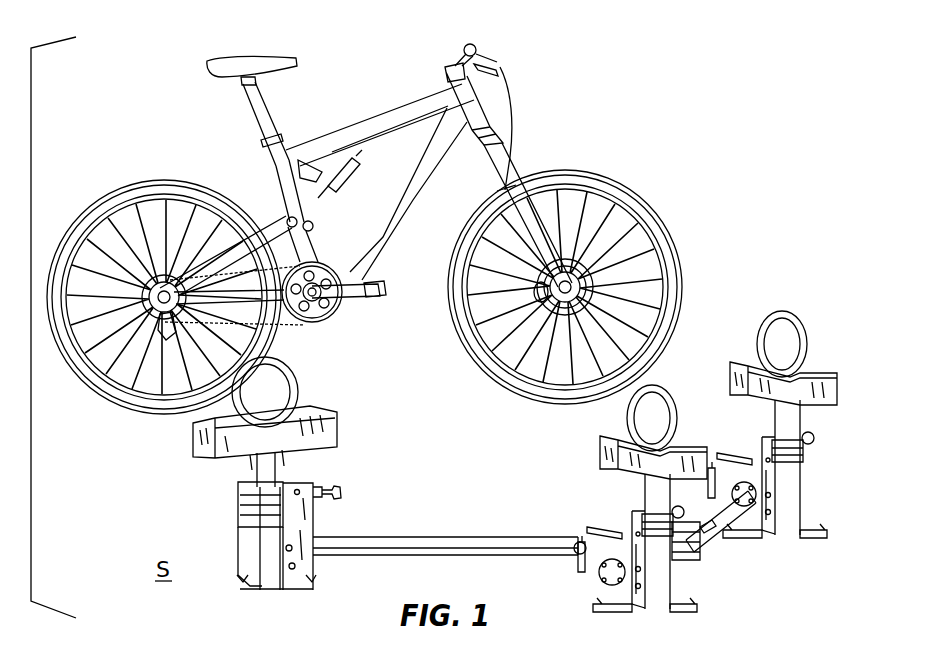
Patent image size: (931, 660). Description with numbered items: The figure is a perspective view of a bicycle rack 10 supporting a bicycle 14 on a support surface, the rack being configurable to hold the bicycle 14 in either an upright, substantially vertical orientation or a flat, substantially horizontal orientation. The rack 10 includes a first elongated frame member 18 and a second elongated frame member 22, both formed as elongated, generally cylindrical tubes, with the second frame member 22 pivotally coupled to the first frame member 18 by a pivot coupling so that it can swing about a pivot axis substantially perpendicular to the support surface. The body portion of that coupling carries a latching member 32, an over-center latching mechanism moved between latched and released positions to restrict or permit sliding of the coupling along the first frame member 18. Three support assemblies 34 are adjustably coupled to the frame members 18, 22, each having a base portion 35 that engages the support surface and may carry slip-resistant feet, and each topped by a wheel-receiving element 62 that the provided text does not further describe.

The bicycle rack 10 is at (757, 273).
The bicycle 14 is at (382, 122).
The first elongated frame member 18 is at (707, 535).
The second elongated frame member 22 is at (453, 540).
The latching member 32 is at (703, 540).
The support assembly 34 is at (247, 535).
The base portion 35 is at (307, 570).
The wheel hoop 62 is at (197, 435).